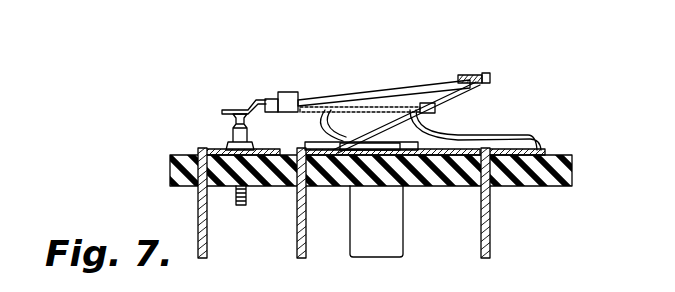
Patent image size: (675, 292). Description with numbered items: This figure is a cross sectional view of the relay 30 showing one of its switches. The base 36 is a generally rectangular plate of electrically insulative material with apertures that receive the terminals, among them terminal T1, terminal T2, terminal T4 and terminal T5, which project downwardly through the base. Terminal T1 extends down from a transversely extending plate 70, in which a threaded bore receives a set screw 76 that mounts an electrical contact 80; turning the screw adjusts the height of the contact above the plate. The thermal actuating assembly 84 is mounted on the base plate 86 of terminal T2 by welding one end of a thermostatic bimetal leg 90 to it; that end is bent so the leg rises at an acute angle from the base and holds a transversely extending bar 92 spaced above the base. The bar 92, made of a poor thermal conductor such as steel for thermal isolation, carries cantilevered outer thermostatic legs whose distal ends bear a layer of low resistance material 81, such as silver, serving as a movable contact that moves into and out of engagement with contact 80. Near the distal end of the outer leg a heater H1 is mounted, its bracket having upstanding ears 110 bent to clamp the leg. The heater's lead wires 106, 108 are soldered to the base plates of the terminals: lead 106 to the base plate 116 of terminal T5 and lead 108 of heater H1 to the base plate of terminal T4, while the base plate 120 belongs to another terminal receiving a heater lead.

The relay 30 is at (160, 171).
The base 36 is at (572, 172).
The plate 70 is at (204, 149).
The set screw 76 is at (247, 204).
The electrical contact 80 is at (232, 121).
The layer of low resistance material 81 is at (226, 110).
The thermal actuating assembly 84 is at (386, 86).
The base plate 86 is at (303, 149).
The leg 90 is at (430, 101).
The bar 92 is at (472, 75).
The lead wire 106 is at (488, 138).
The lead wire 108 is at (324, 120).
The upstanding ears 110 is at (283, 92).
The heater H1 is at (372, 100).
The base plate 116 is at (545, 150).
The base plate 120 is at (416, 134).
The terminal T1 is at (207, 248).
The terminal T2 is at (306, 250).
The terminal T4 is at (403, 238).
The terminal T5 is at (490, 218).